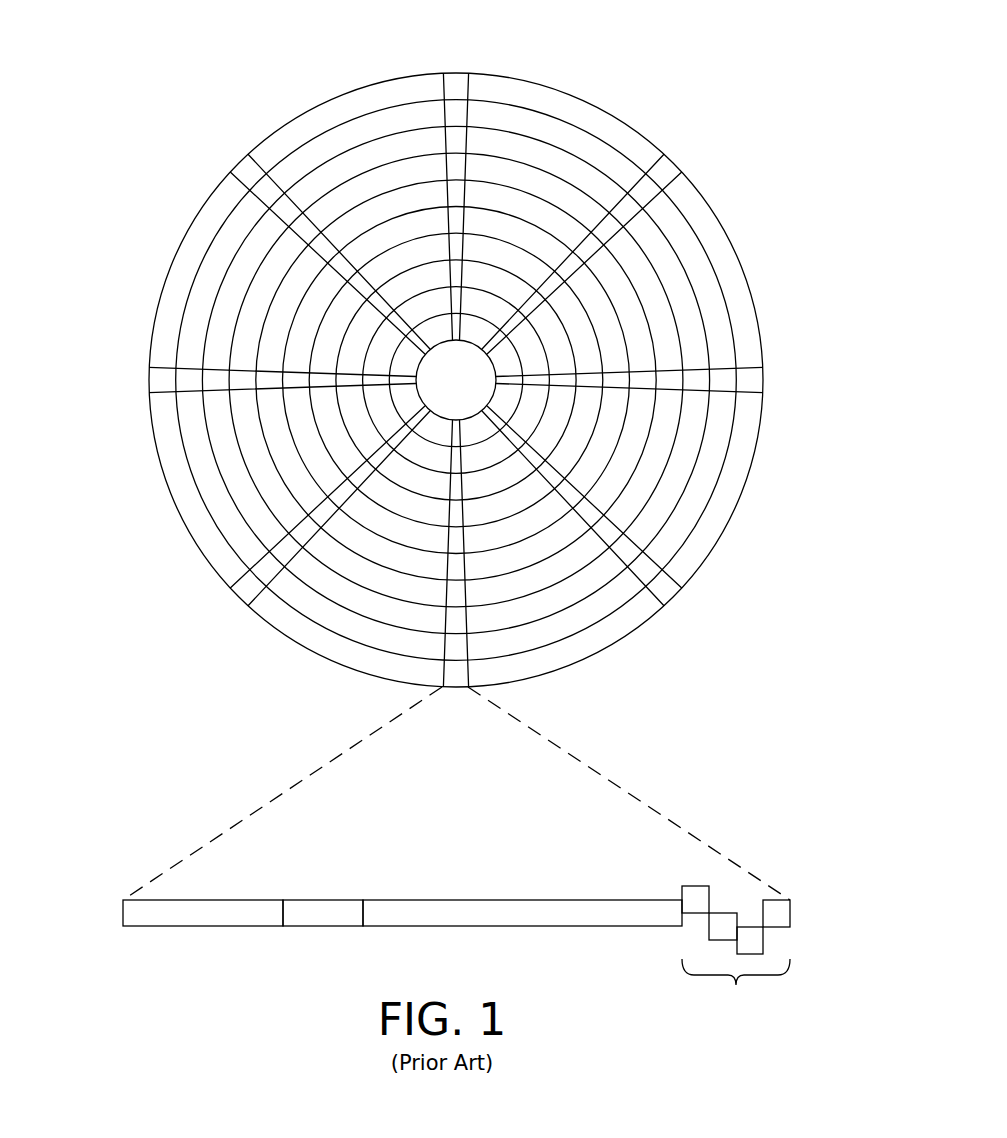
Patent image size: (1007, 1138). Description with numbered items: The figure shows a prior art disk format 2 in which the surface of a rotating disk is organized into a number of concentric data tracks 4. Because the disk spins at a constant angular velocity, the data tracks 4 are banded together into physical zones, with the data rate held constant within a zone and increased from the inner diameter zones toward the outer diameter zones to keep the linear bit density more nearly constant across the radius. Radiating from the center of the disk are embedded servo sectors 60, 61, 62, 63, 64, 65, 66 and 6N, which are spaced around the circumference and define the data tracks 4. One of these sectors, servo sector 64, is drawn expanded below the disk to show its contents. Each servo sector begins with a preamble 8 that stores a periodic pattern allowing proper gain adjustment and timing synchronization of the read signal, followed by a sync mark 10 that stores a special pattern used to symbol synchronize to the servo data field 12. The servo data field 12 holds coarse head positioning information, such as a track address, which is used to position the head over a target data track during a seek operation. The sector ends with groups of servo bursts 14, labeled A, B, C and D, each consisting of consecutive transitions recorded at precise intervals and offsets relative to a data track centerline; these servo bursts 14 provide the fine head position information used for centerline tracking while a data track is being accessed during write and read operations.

The disk format 2 is at (230, 78).
The data tracks 4 is at (560, 136).
The servo sector 60 is at (458, 82).
The servo sector 61 is at (672, 170).
The servo sector 62 is at (755, 380).
The servo sector 63 is at (667, 593).
The servo sector 64 is at (321, 758).
The servo sector 65 is at (243, 595).
The servo sector 66 is at (155, 378).
The servo sector 6N is at (242, 162).
The preamble 8 is at (183, 926).
The sync mark 10 is at (320, 926).
The servo data field 12 is at (510, 926).
The servo bursts 14 is at (673, 871).